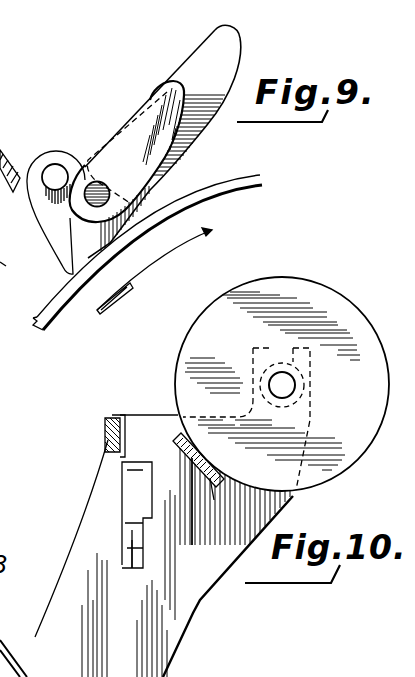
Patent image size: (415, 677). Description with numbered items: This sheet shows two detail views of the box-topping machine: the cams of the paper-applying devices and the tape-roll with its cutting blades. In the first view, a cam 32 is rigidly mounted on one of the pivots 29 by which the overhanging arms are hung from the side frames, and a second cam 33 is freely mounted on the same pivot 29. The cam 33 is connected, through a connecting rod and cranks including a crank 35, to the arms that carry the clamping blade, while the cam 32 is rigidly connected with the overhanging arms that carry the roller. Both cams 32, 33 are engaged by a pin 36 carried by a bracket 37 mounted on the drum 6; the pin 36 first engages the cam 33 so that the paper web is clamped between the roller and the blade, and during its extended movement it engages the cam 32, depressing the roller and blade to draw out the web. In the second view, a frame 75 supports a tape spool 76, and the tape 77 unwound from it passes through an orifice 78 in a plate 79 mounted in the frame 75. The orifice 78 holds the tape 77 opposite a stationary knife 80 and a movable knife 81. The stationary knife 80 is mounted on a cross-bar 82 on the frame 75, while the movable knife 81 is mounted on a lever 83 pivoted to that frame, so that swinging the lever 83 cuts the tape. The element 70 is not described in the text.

In FIG. 9, the drum 6 is at (124, 246).
In FIG. 9, the pivot 29 is at (100, 208).
In FIG. 9, the cam 32 is at (203, 77).
In FIG. 9, the cam 33 is at (127, 147).
In FIG. 9, the crank 35 is at (14, 252).
In FIG. 9, the pin 36 is at (58, 170).
In FIG. 9, the bracket 37 is at (155, 150).
In FIG. 9, the guide strip 70 is at (10, 161).
In FIG. 10, the frame 75 is at (153, 602).
In FIG. 10, the tape spool 76 is at (282, 384).
In FIG. 10, the tape 77 is at (194, 532).
In FIG. 10, the orifice 78 is at (188, 462).
In FIG. 10, the plate 79 is at (210, 483).
In FIG. 10, the stationary knife 80 is at (127, 432).
In FIG. 10, the movable knife 81 is at (125, 545).
In FIG. 10, the cross-bar 82 is at (105, 435).
In FIG. 10, the lever 83 is at (140, 552).